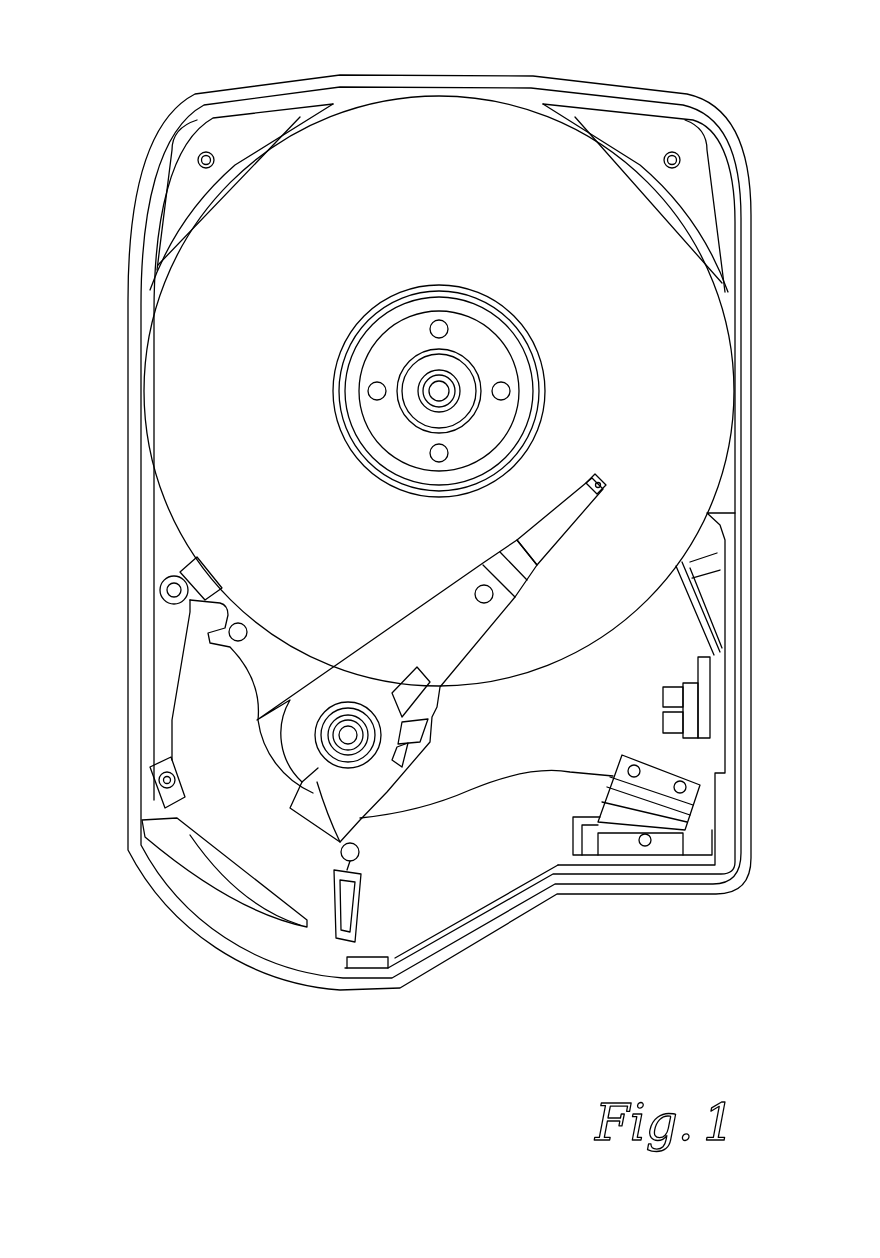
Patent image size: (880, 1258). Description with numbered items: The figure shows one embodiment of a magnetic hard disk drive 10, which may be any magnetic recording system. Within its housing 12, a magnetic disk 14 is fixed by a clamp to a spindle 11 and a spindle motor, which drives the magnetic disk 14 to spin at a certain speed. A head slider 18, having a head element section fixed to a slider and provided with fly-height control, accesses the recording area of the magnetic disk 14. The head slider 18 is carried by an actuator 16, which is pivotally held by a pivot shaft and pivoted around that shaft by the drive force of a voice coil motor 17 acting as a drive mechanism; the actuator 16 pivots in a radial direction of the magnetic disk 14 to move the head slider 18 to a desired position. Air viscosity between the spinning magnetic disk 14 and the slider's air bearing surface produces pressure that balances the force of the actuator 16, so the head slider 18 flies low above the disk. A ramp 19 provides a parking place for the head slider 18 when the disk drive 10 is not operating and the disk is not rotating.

The magnetic hard disk drive 10 is at (123, 45).
The spindle 11 is at (425, 372).
The housing 12 is at (655, 90).
The magnetic disk 14 is at (437, 120).
The actuator 16 is at (455, 733).
The voice coil motor (VCM) 17 is at (210, 742).
The head slider 18 is at (603, 478).
The ramp 19 is at (702, 660).